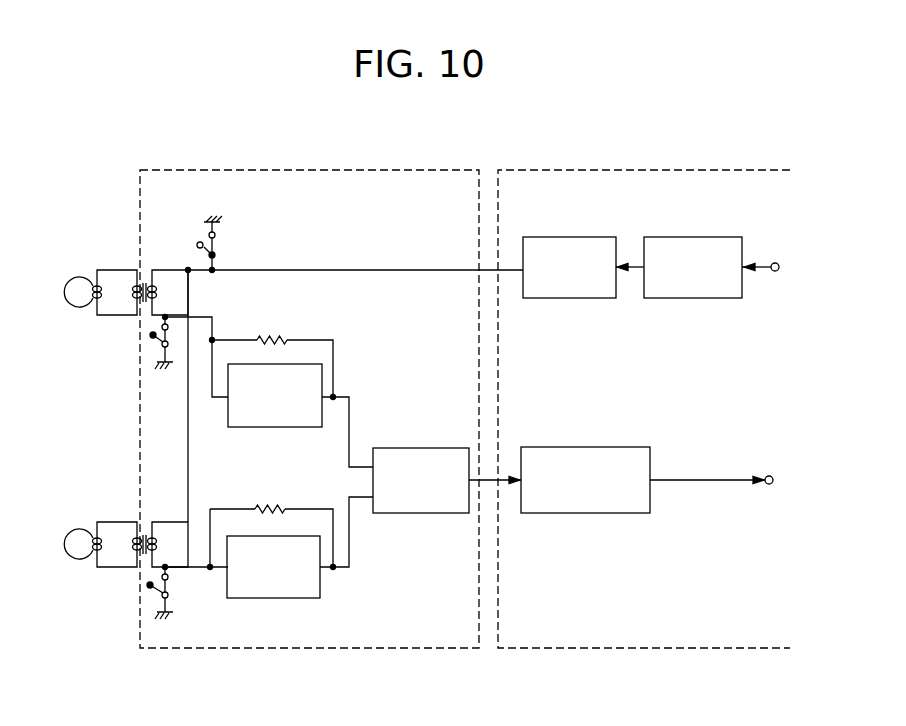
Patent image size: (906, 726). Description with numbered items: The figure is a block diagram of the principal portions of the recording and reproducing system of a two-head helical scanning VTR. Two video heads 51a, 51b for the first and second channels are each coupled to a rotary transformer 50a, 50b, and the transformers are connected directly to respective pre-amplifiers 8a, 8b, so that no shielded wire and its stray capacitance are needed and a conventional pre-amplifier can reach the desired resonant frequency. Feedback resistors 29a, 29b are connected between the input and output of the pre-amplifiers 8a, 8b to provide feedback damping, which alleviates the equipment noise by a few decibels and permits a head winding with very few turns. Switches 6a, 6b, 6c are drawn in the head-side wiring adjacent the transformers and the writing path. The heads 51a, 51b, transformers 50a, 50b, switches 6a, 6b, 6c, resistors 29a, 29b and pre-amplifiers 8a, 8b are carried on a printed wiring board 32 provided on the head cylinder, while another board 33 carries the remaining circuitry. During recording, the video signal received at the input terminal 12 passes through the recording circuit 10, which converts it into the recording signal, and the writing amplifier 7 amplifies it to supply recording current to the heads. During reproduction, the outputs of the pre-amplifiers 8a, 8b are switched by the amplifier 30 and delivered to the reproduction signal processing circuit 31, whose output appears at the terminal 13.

The video head 51a is at (77, 308).
The rotary transformer 50a is at (140, 305).
The switch 6a is at (217, 247).
The switch 6b is at (168, 333).
The feedback resistor 29a is at (283, 337).
The pre-amplifier 8a is at (253, 428).
The amplifier 30 is at (442, 447).
The writing amplifier 7 is at (585, 300).
The recording circuit 10 is at (707, 300).
The input terminal 12 is at (773, 272).
The reproduction signal processing circuit 31 is at (595, 447).
The output terminal 13 is at (767, 485).
The printed wiring board 32 is at (420, 650).
The board 33 is at (560, 650).
The video head 51b is at (77, 560).
The rotary transformer 50b is at (140, 558).
The switch 6c is at (168, 590).
The feedback resistor 29b is at (278, 508).
The pre-amplifier 8b is at (292, 600).